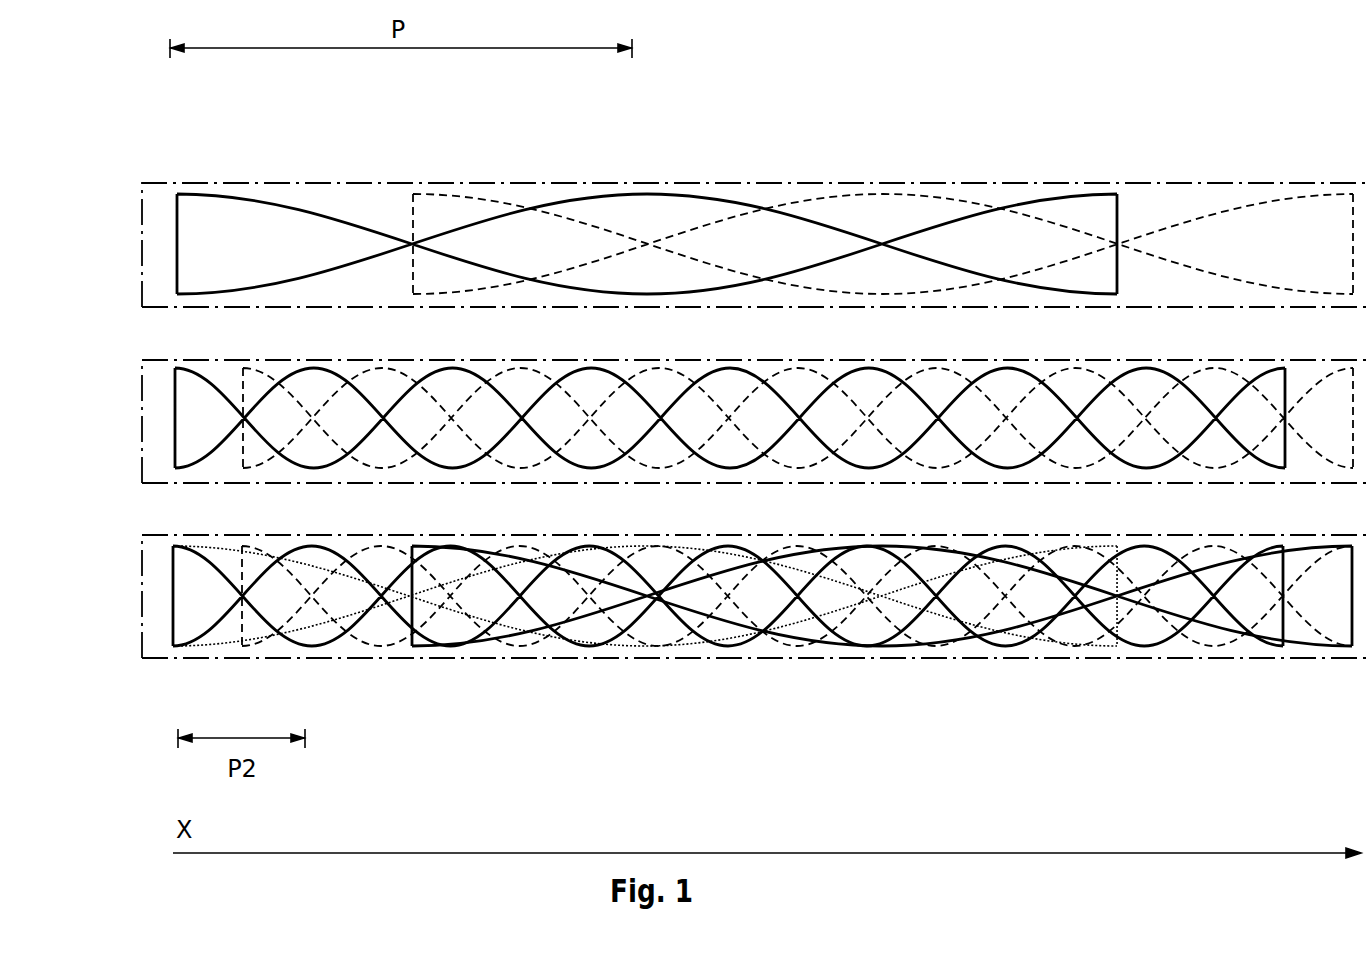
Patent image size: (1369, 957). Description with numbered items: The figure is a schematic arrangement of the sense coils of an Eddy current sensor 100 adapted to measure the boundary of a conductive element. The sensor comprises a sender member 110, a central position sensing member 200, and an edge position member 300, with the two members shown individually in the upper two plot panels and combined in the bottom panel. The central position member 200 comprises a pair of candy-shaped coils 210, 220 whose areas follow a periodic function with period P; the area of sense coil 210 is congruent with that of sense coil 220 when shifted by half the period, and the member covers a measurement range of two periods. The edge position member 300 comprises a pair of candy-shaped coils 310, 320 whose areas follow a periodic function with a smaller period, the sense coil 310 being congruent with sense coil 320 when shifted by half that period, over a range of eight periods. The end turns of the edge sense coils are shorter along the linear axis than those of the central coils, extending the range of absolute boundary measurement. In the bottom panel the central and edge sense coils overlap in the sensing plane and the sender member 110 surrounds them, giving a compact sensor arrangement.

The Eddy current sensor 100 is at (104, 599).
The sender member 110 is at (142, 640).
The central position sensing member 200 is at (104, 250).
The sense coil 210 is at (316, 211).
The sense coil 220 is at (481, 199).
The edge position member 300 is at (104, 409).
The sense coil 310 is at (174, 436).
The sense coil 320 is at (240, 381).